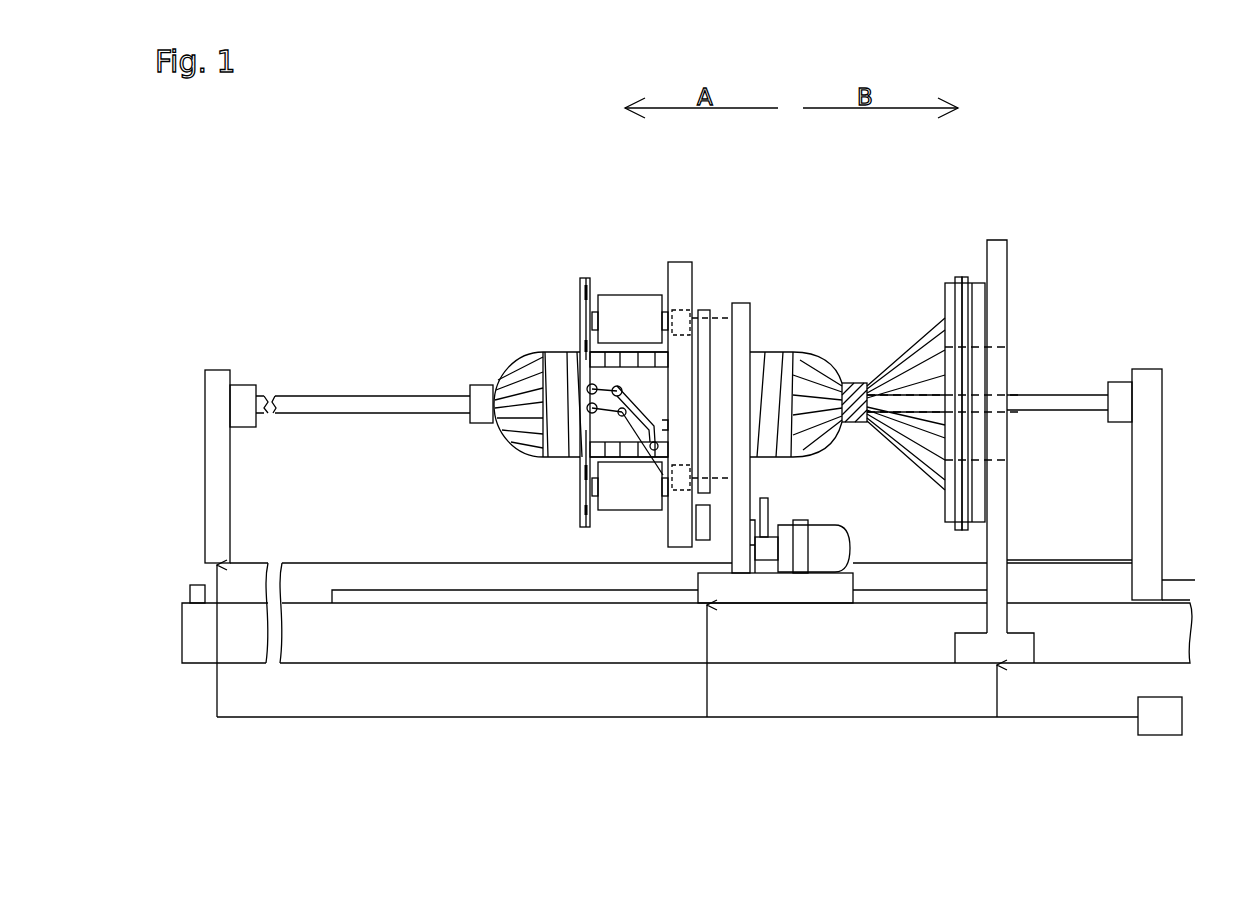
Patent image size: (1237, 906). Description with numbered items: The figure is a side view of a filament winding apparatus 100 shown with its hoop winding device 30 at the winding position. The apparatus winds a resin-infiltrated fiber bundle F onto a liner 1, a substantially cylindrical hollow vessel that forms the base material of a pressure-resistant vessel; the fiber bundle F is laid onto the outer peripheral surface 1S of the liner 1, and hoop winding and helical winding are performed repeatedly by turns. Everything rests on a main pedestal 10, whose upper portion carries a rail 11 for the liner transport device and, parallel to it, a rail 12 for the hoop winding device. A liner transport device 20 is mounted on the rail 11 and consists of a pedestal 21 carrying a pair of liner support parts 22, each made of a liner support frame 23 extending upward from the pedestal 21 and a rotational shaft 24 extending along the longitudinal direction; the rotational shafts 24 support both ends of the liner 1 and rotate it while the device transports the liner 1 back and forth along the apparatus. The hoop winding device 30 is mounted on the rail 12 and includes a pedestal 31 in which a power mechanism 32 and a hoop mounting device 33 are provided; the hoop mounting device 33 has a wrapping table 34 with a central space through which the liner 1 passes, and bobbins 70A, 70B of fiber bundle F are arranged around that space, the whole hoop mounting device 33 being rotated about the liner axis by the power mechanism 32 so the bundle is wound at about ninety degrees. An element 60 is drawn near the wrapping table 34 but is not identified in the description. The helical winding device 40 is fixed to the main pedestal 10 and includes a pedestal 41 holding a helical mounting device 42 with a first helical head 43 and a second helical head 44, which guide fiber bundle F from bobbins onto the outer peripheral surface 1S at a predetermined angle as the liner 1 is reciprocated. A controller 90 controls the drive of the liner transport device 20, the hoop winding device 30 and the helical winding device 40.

The FW apparatus 100 is at (416, 198).
The liner 1 is at (778, 278).
The outer peripheral surface 1S is at (805, 355).
The fiber bundle F is at (775, 360).
The main pedestal 10 is at (803, 632).
The rail for the liner transport device 11 is at (1178, 592).
The rail for the hoop winding device 12 is at (437, 597).
The liner transport device 20 is at (170, 318).
The pedestal 21 is at (1060, 568).
The liner support parts 22 is at (207, 357).
The liner support frame 23 is at (213, 440).
The rotational shaft 24 is at (262, 392).
The hoop winding device 30 is at (640, 218).
The pedestal 31 is at (740, 305).
The power mechanism 32 is at (831, 511).
The hoop mounting device 33 is at (707, 242).
The wrapping table 34 is at (680, 280).
The helical winding device 40 is at (995, 222).
The pedestal 41 is at (1003, 263).
The helical mounting device 42 is at (951, 224).
The first helical head 43 is at (968, 275).
The second helical head 44 is at (958, 278).
The fiber cutting/holding mechanism 60 is at (561, 336).
The bobbin 70A is at (626, 512).
The bobbin 70B is at (630, 305).
The controller 90 is at (1160, 737).